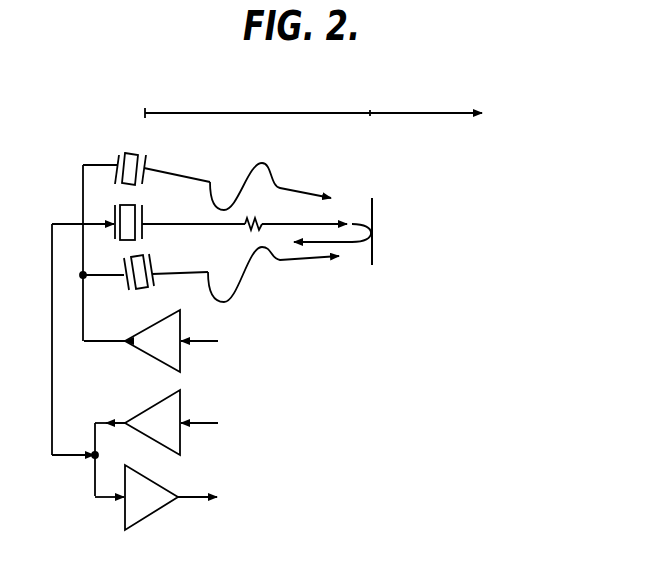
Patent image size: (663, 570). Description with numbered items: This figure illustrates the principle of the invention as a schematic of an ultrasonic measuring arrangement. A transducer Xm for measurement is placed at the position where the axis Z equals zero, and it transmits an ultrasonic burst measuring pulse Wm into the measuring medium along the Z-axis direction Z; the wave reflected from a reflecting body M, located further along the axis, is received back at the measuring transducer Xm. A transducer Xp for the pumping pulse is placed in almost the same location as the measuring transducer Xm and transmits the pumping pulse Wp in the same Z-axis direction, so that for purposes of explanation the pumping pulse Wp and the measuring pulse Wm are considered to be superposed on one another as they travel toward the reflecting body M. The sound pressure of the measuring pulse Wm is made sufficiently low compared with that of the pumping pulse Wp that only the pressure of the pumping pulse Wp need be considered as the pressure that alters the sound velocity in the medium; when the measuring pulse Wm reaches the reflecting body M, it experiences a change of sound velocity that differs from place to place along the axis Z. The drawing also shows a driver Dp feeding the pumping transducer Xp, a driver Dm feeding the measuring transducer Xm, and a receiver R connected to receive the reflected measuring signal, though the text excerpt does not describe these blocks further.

The Z-axis direction Z is at (322, 102).
The transducer for the pumping pulse Xp is at (162, 204).
The transducer for measurement Xm is at (231, 217).
The pumping pulse Wp is at (273, 222).
The measuring pulse Wm is at (294, 240).
The reflecting body M is at (371, 217).
The pump driver amplifier Dp is at (151, 341).
The measuring driver amplifier Dm is at (156, 422).
The receiver amplifier R is at (156, 497).